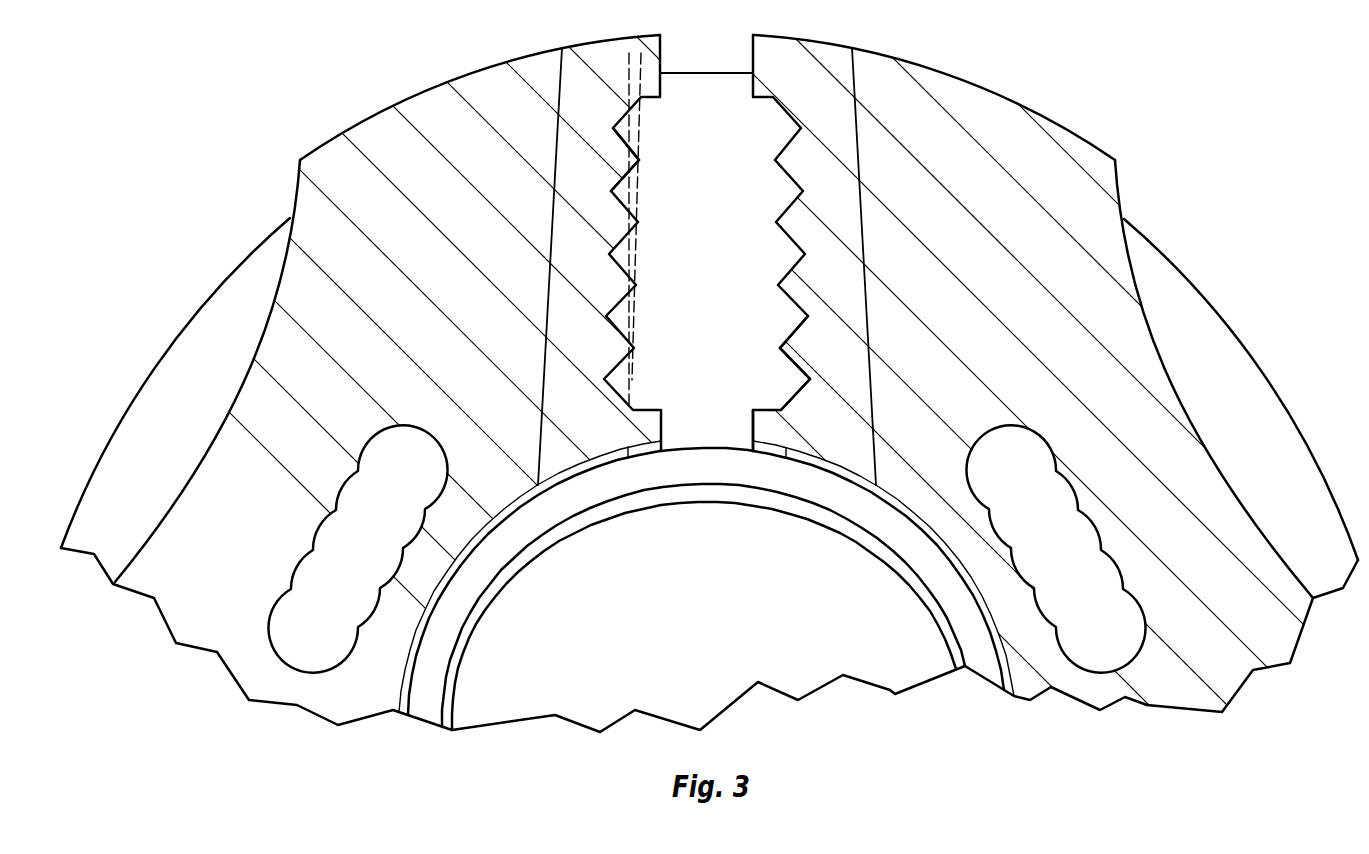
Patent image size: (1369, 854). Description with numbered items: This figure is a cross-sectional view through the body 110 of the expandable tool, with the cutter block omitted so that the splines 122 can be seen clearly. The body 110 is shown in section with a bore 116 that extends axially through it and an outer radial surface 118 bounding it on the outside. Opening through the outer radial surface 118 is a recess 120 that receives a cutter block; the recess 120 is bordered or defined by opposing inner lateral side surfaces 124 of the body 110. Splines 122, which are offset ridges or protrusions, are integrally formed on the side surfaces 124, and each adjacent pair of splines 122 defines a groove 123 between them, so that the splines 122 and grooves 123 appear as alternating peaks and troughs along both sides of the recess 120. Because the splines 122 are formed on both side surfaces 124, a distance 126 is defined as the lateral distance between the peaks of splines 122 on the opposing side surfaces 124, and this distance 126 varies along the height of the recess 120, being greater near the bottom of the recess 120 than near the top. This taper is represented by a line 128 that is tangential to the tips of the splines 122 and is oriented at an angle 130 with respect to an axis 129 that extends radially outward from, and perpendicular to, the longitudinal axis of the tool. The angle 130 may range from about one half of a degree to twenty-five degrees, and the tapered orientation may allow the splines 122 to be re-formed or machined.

The body 110 is at (950, 272).
The bore 116 is at (720, 594).
The outer radial surface 118 is at (1013, 104).
The recess 120 is at (722, 292).
The splines 122 is at (781, 348).
The groove 123 is at (810, 380).
The side surfaces 124 is at (753, 433).
The distance 126 is at (776, 222).
The line 128 is at (640, 182).
The axis 129 is at (630, 128).
The angle 130 is at (603, 65).